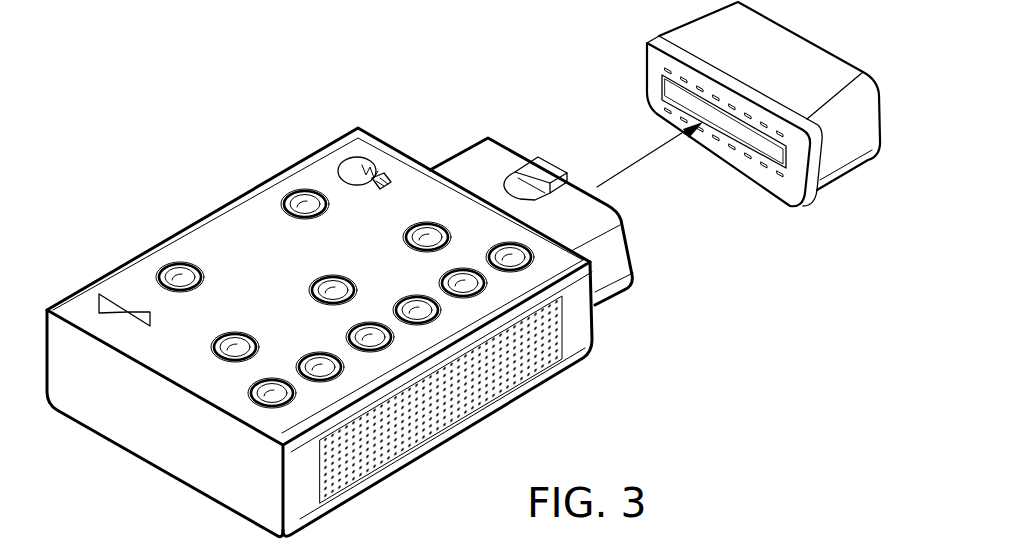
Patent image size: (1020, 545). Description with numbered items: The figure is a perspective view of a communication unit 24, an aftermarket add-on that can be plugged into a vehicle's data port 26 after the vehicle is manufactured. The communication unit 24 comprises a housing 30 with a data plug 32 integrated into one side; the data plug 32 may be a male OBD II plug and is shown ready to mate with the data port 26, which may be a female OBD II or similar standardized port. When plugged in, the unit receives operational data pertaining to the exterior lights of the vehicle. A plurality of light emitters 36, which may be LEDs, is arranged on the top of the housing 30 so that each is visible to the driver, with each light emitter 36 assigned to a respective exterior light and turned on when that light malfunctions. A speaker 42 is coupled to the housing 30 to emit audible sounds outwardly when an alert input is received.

The communication unit 24 is at (282, 136).
The data port 26 is at (847, 173).
The housing 30 is at (43, 320).
The data plug 32 is at (607, 300).
The light emitters 36 is at (303, 205).
The speaker 42 is at (517, 363).